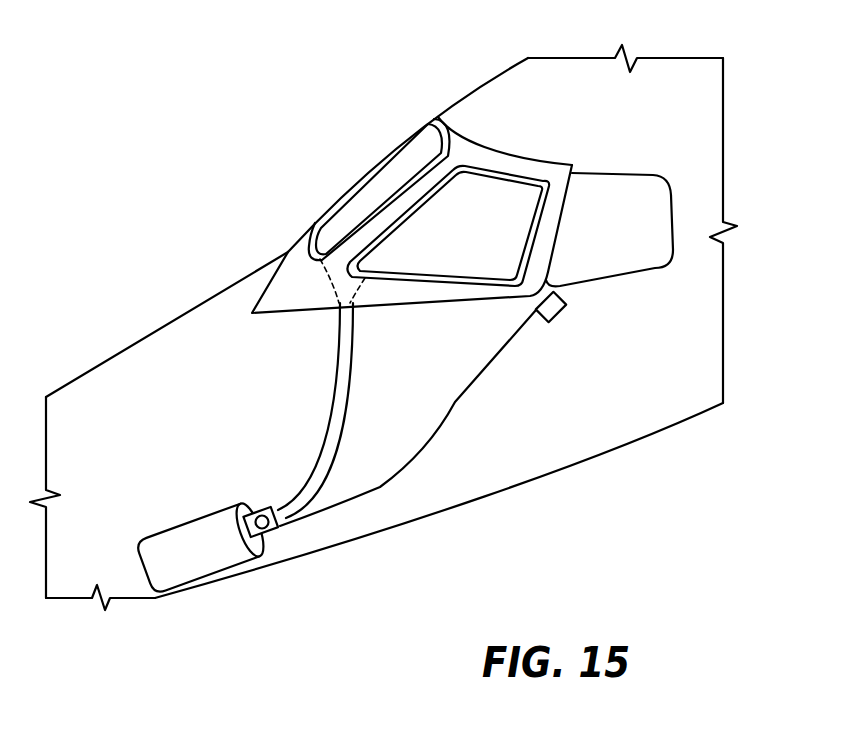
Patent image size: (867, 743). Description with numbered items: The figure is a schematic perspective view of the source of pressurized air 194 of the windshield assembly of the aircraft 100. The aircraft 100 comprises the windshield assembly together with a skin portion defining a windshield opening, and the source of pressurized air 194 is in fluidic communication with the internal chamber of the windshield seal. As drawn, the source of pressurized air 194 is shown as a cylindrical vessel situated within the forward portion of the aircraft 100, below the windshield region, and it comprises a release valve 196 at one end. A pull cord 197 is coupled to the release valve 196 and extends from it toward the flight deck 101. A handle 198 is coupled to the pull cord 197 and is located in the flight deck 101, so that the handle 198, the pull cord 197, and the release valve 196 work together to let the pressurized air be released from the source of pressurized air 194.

The aircraft 100 is at (276, 194).
The flight deck 101 is at (648, 374).
The source of pressurized air 194 is at (203, 565).
The release valve 196 is at (263, 537).
The pull cord 197 is at (325, 512).
The handle 198 is at (563, 308).